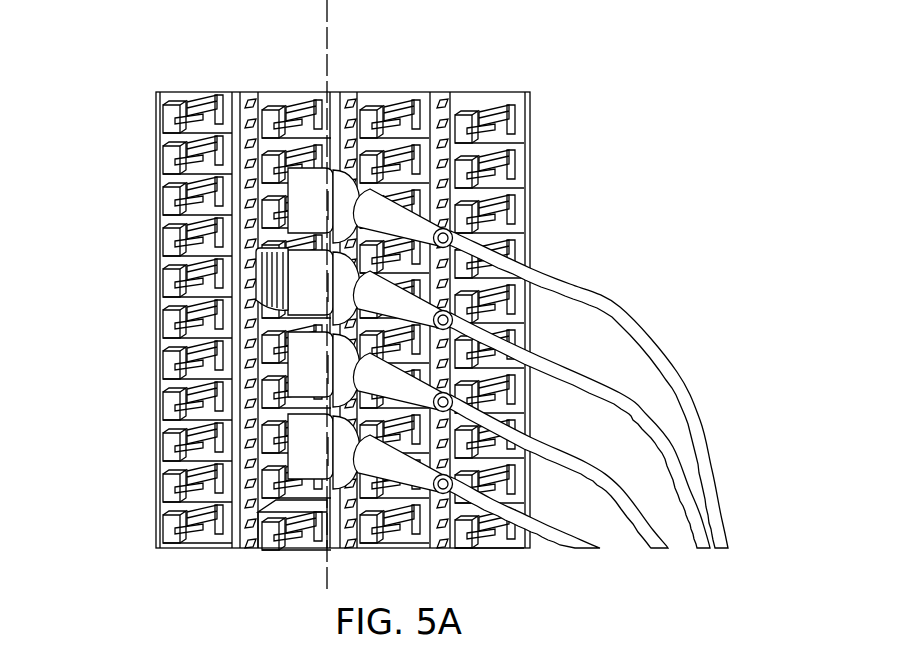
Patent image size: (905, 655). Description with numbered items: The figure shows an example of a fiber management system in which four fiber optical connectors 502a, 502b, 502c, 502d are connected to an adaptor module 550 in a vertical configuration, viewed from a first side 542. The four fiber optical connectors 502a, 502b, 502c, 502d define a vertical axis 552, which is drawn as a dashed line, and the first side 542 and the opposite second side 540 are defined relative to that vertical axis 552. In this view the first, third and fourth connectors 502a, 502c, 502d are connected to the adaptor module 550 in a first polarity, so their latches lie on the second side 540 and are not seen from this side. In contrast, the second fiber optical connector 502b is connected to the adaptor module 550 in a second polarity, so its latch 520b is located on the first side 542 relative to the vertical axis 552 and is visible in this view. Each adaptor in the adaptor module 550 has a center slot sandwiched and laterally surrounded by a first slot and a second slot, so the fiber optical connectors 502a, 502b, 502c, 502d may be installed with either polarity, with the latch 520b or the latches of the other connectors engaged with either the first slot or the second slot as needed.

The second side 540 is at (476, 75).
The first side 542 is at (225, 75).
The adaptor module 550 is at (300, 102).
The vertical axis 552 is at (332, 48).
The latch 520b is at (277, 283).
The fiber optical connector 502a is at (413, 232).
The fiber optical connector 502b is at (380, 398).
The fiber optical connector 502c is at (415, 395).
The fiber optical connector 502d is at (415, 480).